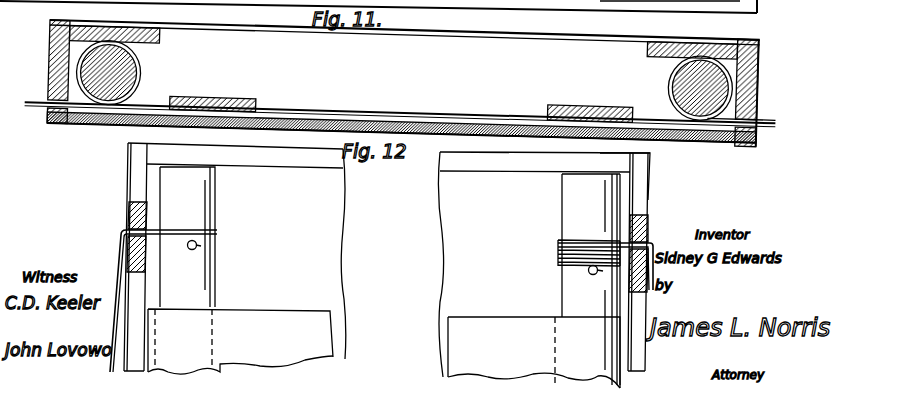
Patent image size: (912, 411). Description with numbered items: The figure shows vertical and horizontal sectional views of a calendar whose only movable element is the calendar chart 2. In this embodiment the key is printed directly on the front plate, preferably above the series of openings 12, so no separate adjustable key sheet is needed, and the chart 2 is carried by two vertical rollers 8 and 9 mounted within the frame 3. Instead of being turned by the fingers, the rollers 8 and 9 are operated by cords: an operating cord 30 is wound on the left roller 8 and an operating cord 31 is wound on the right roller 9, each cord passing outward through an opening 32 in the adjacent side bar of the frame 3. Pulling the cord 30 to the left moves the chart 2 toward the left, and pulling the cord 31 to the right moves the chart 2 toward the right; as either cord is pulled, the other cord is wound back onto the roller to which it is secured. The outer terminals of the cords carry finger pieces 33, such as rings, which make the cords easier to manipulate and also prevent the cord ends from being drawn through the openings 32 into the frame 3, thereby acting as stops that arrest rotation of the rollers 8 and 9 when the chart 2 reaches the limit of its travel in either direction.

In FIG. 11, the calendar chart 2 is at (365, 115).
In FIG. 12, the calendar chart 2 is at (260, 318).
In FIG. 11, the frame 3 is at (760, 63).
In FIG. 12, the frame 3 is at (650, 186).
In FIG. 11, the roller 8 is at (128, 74).
In FIG. 12, the roller 8 is at (202, 192).
In FIG. 11, the roller 9 is at (688, 82).
In FIG. 12, the roller 9 is at (577, 200).
In FIG. 11, the series of openings 12 is at (240, 127).
In FIG. 11, the operating cord 30 is at (30, 110).
In FIG. 12, the operating cord 30 is at (122, 250).
In FIG. 11, the operating cord 31 is at (720, 124).
In FIG. 12, the operating cord 31 is at (565, 240).
In FIG. 11, the openings 32 is at (50, 97).
In FIG. 12, the openings 32 is at (128, 228).
In FIG. 11, the finger pieces 33 is at (30, 0).